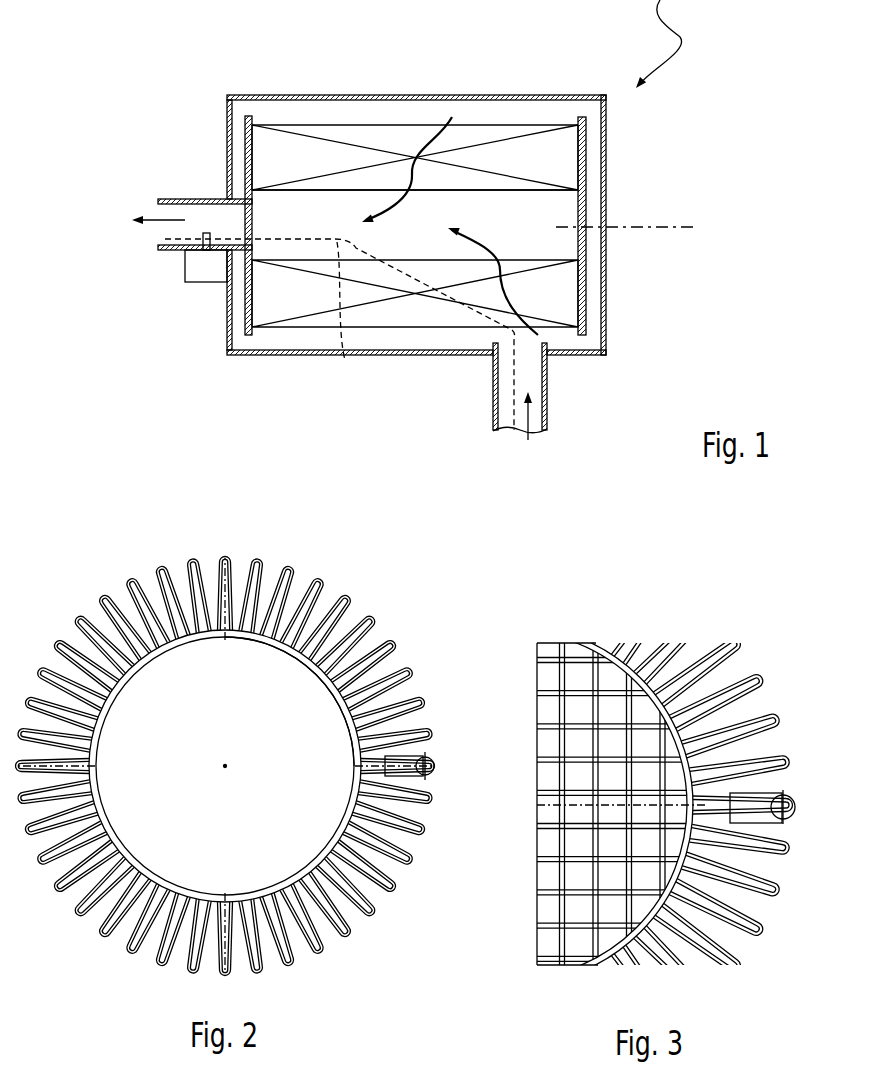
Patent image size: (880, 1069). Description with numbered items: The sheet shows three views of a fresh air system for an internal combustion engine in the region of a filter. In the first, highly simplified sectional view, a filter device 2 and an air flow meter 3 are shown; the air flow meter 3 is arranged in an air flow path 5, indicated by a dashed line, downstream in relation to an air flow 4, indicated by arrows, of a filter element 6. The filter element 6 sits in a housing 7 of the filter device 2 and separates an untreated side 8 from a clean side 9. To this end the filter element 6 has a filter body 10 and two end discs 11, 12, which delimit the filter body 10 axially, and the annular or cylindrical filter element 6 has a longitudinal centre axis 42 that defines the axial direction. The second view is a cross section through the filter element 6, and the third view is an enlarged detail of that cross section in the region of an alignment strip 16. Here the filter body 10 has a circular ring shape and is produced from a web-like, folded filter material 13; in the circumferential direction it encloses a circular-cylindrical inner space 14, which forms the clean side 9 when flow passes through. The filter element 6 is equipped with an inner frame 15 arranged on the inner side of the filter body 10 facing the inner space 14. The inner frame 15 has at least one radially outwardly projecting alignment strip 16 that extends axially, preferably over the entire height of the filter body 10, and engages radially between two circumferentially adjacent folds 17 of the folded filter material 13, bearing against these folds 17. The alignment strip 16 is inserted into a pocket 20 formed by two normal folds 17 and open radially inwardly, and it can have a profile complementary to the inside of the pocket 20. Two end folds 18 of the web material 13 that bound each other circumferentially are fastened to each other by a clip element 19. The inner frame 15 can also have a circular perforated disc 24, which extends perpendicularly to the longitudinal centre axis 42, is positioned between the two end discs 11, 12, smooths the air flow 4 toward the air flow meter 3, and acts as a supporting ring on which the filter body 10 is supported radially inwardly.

In FIG. 1, the filter device 2 is at (612, 154).
In FIG. 1, the air flow meter 3 is at (196, 264).
In FIG. 1, the air flow 4 is at (163, 220).
In FIG. 1, the air flow path 5 is at (345, 360).
In FIG. 1, the filter element 6 is at (414, 118).
In FIG. 2, the filter element 6 is at (398, 612).
In FIG. 1, the housing 7 is at (336, 95).
In FIG. 1, the untreated side 8 is at (513, 110).
In FIG. 1, the clean side 9 is at (474, 229).
In FIG. 1, the filter body 10 is at (307, 302).
In FIG. 2, the filter body 10 is at (82, 610).
In FIG. 3, the filter body 10 is at (703, 645).
In FIG. 1, the end disc 11 is at (247, 143).
In FIG. 1, the end disc 12 is at (583, 200).
In FIG. 2, the folded filter material 13 is at (190, 566).
In FIG. 3, the folded filter material 13 is at (656, 650).
In FIG. 2, the inner space 14 is at (207, 736).
In FIG. 2, the inner frame 15 is at (226, 888).
In FIG. 3, the inner frame 15 is at (619, 643).
In FIG. 2, the alignment strip 16 is at (396, 740).
In FIG. 3, the alignment strip 16 is at (718, 772).
In FIG. 3, the folds 17 is at (741, 772).
In FIG. 3, the end folds 18 is at (760, 801).
In FIG. 2, the clip element 19 is at (435, 762).
In FIG. 3, the clip element 19 is at (797, 807).
In FIG. 3, the pocket 20 is at (752, 775).
In FIG. 3, the perforated disc 24 is at (578, 655).
In FIG. 1, the longitudinal centre axis 42 is at (664, 227).